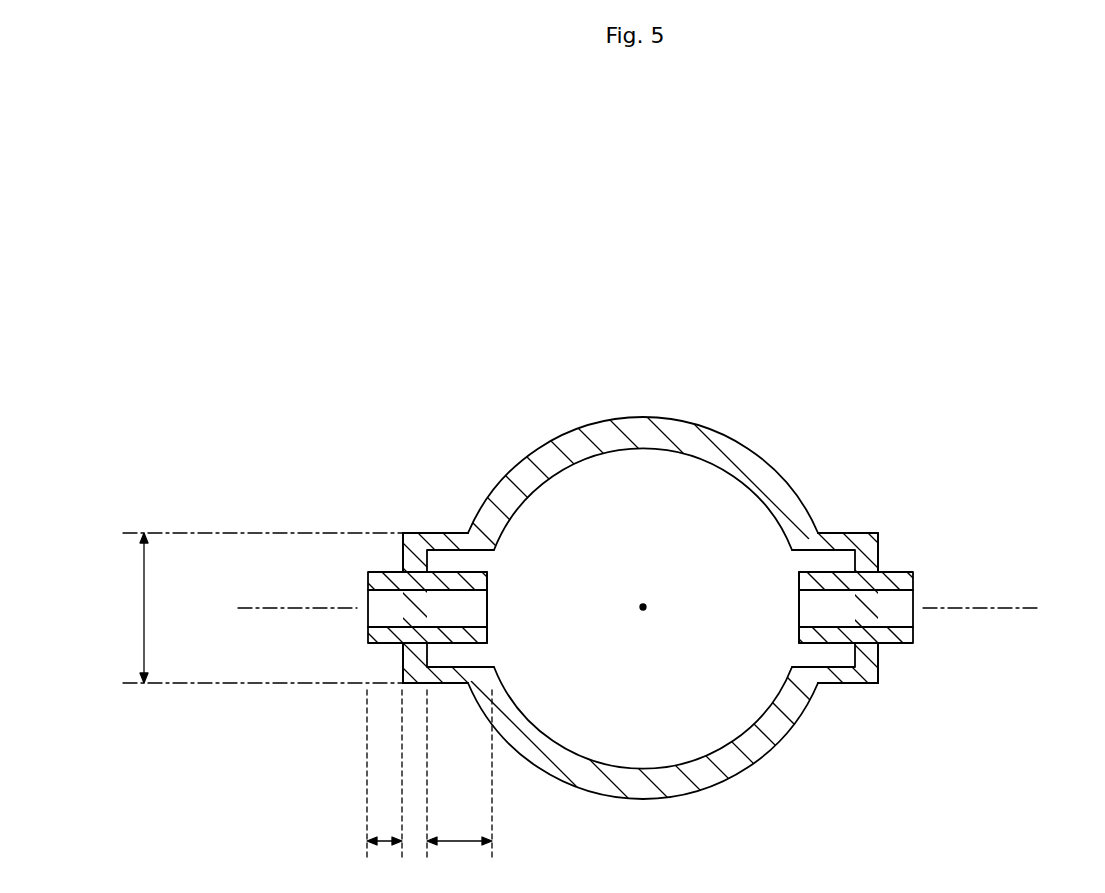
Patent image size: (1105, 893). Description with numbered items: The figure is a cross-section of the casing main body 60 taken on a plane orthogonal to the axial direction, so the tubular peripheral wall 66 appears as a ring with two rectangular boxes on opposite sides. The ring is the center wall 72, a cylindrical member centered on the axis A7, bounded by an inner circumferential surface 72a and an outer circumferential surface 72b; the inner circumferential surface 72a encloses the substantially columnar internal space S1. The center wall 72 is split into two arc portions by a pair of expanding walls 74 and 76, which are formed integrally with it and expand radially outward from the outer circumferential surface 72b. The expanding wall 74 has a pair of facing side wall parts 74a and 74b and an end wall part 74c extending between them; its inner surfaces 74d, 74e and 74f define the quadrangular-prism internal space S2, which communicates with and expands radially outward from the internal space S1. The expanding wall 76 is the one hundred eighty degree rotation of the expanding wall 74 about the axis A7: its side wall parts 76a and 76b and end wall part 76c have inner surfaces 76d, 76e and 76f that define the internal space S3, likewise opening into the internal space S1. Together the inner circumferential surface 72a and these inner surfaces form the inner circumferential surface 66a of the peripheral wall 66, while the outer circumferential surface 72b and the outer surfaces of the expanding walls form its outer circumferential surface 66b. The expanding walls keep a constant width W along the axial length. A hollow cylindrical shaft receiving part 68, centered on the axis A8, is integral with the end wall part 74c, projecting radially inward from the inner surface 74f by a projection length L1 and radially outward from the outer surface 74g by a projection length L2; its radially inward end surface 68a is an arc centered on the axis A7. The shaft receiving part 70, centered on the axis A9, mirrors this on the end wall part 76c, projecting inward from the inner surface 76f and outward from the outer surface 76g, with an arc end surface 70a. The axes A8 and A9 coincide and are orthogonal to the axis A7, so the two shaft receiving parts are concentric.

The casing main body 60 is at (814, 269).
The peripheral wall 66 is at (768, 452).
The inner circumferential surface of the peripheral wall 66a is at (708, 472).
The outer circumferential surface of the peripheral wall 66b is at (772, 781).
The center wall 72 is at (668, 430).
The inner circumferential surface of the center wall 72a is at (595, 460).
The outer circumferential surface of the center wall 72b is at (593, 422).
The expanding wall 74 is at (402, 532).
The side wall part 74a is at (447, 540).
The side wall part 74b is at (445, 690).
The end wall part 74c is at (403, 658).
The inner surface of the side wall part 74a 74d is at (465, 556).
The inner surface of the side wall part 74b 74e is at (472, 665).
The inner surface of the end wall part 74c 74f is at (433, 670).
The outer surface of the end wall part 74c 74g is at (403, 548).
The shaft receiving part 68 is at (368, 572).
The end surface of the shaft receiving part 68 68a is at (487, 585).
The expanding wall 76 is at (848, 608).
The side wall part 76a is at (835, 542).
The side wall part 76b is at (818, 686).
The end wall part 76c is at (880, 660).
The inner surface of the side wall part 76a 76d is at (810, 550).
The inner surface of the side wall part 76b 76e is at (812, 667).
The inner surface of the end wall part 76c 76f is at (858, 670).
The outer surface of the end wall part 76c 76g is at (887, 553).
The shaft receiving part 70 is at (898, 572).
The end surface of the shaft receiving part 70 70a is at (800, 620).
The internal space S1 is at (671, 547).
The internal space S2 is at (435, 547).
The internal space S3 is at (880, 553).
The axis A7 is at (643, 612).
The axis A8 is at (248, 610).
The axis A9 is at (1027, 608).
The width W is at (261, 608).
The projection length L1 is at (459, 784).
The projection length L2 is at (384, 784).